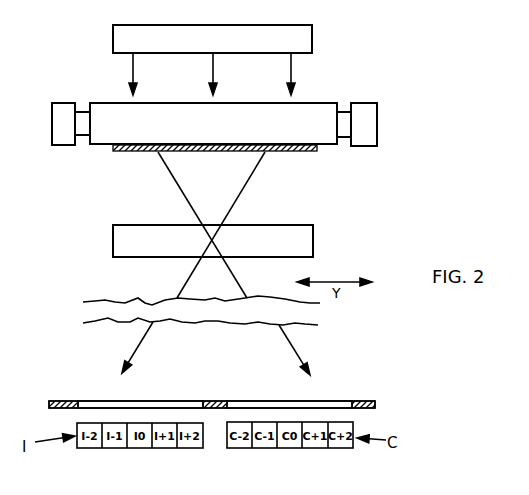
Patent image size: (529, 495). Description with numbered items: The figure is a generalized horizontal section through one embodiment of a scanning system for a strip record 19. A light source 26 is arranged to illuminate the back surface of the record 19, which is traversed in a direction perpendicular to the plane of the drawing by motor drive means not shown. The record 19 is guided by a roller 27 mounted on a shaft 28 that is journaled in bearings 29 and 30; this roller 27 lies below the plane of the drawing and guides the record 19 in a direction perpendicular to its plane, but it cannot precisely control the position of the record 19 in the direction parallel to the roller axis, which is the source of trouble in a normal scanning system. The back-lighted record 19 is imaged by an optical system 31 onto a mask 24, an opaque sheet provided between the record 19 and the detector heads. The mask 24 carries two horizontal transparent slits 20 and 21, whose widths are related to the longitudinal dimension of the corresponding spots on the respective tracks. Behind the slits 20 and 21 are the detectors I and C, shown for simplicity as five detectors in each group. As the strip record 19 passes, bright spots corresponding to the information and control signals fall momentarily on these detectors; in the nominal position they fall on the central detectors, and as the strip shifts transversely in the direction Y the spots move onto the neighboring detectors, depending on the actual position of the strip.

The record 19 is at (311, 150).
The transparent slit 20 is at (173, 402).
The transparent slit 21 is at (263, 402).
The mask 24 is at (58, 402).
The light source 26 is at (312, 43).
The roller 27 is at (312, 102).
The shaft 28 is at (342, 107).
The bearing 29 is at (57, 103).
The bearing 30 is at (377, 127).
The optical system 31 is at (313, 238).